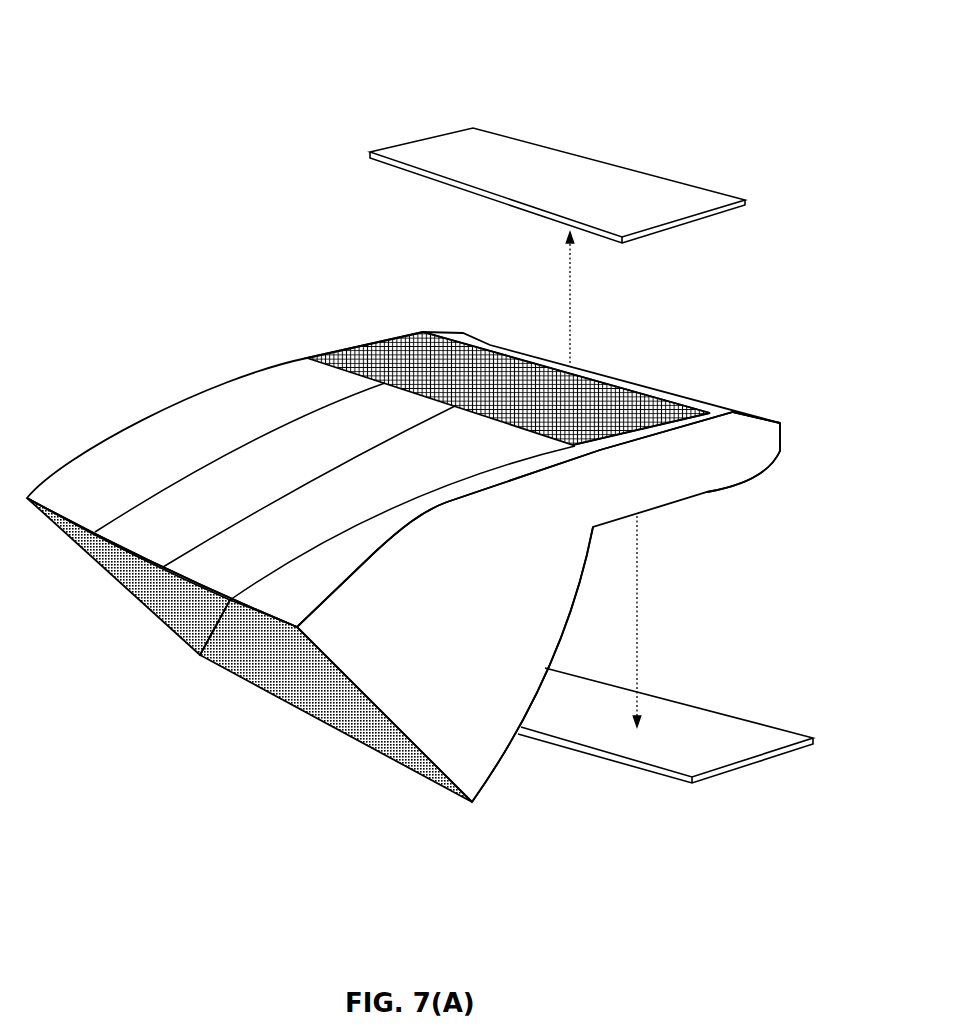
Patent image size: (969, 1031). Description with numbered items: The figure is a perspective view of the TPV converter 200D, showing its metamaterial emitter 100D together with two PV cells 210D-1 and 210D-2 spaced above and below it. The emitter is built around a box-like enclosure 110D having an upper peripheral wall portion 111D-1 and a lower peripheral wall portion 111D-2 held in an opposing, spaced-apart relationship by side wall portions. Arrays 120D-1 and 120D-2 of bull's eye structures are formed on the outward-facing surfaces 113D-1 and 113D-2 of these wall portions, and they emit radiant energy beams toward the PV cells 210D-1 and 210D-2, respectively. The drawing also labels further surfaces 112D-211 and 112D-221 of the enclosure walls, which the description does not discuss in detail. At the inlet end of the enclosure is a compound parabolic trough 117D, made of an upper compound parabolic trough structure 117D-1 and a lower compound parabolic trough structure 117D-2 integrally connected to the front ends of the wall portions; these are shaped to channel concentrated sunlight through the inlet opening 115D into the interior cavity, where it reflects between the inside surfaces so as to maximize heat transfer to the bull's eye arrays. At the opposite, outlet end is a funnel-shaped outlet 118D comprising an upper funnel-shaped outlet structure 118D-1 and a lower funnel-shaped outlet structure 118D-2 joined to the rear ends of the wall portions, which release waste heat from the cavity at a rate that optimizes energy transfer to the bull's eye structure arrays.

The TPV converter 200D is at (205, 85).
The PV cell 210D-1 is at (368, 151).
The PV cell 210D-2 is at (709, 708).
The metamaterial emitter 100D is at (190, 330).
The box-like enclosure 110D is at (286, 358).
The first side surface portion 112D-211 is at (77, 526).
The second side surface portion 112D-221 is at (390, 739).
The outward-facing surface 113D-1 is at (367, 342).
The outward-facing surface 113D-2 is at (683, 502).
The upper peripheral wall portion 111D-1 is at (403, 331).
The array of bull's eye structures 120D-1 is at (508, 388).
The lower peripheral wall portion 111D-2 is at (645, 520).
The array of bull's eye structures 120D-2 is at (538, 607).
The inlet opening 115D is at (292, 678).
The compound parabolic trough 117D is at (638, 890).
The upper compound parabolic trough structure 117D-1 is at (178, 537).
The lower compound parabolic trough structure 117D-2 is at (508, 760).
The funnel-shaped outlet 118D is at (690, 282).
The upper funnel-shaped outlet structure 118D-1 is at (715, 410).
The lower funnel-shaped outlet structure 118D-2 is at (745, 480).